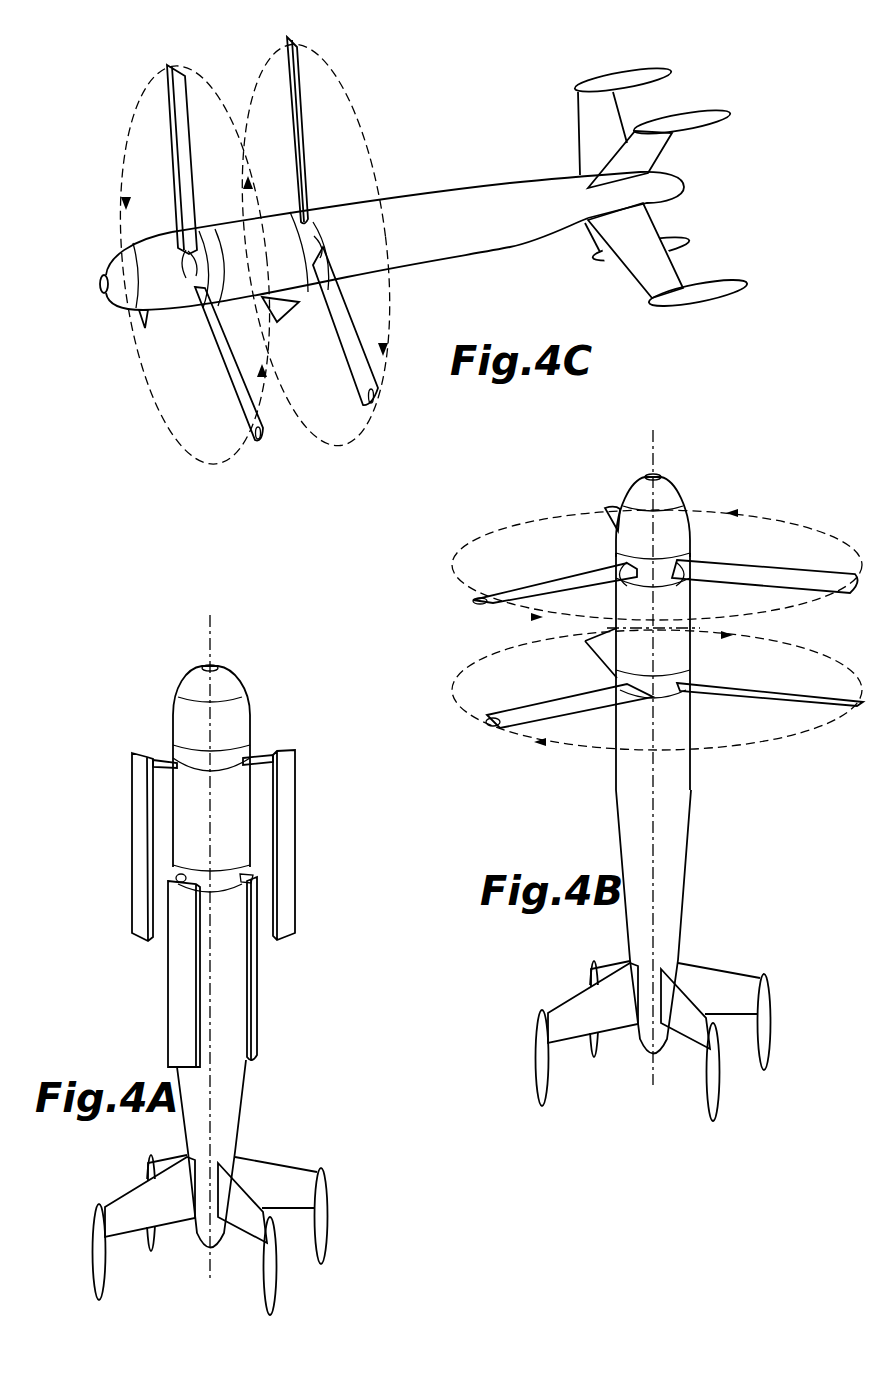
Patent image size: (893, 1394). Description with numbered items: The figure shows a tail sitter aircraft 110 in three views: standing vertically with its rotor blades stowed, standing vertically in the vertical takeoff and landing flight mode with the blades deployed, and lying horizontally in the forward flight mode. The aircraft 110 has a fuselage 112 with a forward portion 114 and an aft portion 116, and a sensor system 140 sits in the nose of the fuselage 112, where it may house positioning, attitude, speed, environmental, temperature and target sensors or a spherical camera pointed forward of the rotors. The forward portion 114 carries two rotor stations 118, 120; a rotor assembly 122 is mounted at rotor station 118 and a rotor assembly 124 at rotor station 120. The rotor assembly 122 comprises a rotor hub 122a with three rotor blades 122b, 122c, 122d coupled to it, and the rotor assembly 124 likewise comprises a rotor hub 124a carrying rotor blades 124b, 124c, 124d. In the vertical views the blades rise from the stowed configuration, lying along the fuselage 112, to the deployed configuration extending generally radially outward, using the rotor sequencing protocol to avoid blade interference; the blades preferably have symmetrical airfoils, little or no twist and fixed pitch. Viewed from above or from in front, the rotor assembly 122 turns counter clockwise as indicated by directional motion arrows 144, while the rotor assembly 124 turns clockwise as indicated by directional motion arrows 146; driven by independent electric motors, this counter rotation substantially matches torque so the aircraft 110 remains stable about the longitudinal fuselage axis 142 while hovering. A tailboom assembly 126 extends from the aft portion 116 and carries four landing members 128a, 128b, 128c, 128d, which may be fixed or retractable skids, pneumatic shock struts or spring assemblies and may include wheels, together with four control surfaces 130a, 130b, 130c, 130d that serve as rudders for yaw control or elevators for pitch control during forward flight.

In FIG. 4C, the tail sitter aircraft 110 is at (386, 98).
In FIG. 4A, the tail sitter aircraft 110 is at (178, 668).
In FIG. 4B, the tail sitter aircraft 110 is at (565, 502).
In FIG. 4C, the fuselage 112 is at (418, 207).
In FIG. 4A, the fuselage 112 is at (240, 980).
In FIG. 4B, the fuselage 112 is at (690, 800).
In FIG. 4C, the forward portion 114 is at (262, 225).
In FIG. 4A, the forward portion 114 is at (238, 815).
In FIG. 4B, the forward portion 114 is at (685, 655).
In FIG. 4C, the aft portion 116 is at (483, 232).
In FIG. 4A, the aft portion 116 is at (222, 1078).
In FIG. 4B, the aft portion 116 is at (680, 897).
In FIG. 4C, the rotor station 118 is at (211, 240).
In FIG. 4A, the rotor station 118 is at (228, 773).
In FIG. 4B, the rotor station 118 is at (617, 626).
In FIG. 4C, the rotor station 120 is at (312, 230).
In FIG. 4A, the rotor station 120 is at (216, 893).
In FIG. 4B, the rotor station 120 is at (620, 742).
In FIG. 4C, the rotor assembly 122 is at (200, 126).
In FIG. 4A, the rotor assembly 122 is at (124, 825).
In FIG. 4B, the rotor assembly 122 is at (770, 558).
In FIG. 4C, the rotor hub 122a is at (190, 278).
In FIG. 4A, the rotor hub 122a is at (195, 768).
In FIG. 4B, the rotor hub 122a is at (668, 578).
In FIG. 4C, the rotor blade 122b is at (172, 110).
In FIG. 4A, the rotor blade 122b is at (138, 862).
In FIG. 4B, the rotor blade 122b is at (615, 502).
In FIG. 4C, the rotor blade 122c is at (143, 328).
In FIG. 4A, the rotor blade 122c is at (290, 867).
In FIG. 4B, the rotor blade 122c is at (507, 597).
In FIG. 4C, the rotor blade 122d is at (233, 388).
In FIG. 4B, the rotor blade 122d is at (810, 568).
In FIG. 4C, the rotor assembly 124 is at (308, 100).
In FIG. 4A, the rotor assembly 124 is at (262, 1023).
In FIG. 4B, the rotor assembly 124 is at (803, 714).
In FIG. 4C, the rotor hub 124a is at (315, 240).
In FIG. 4A, the rotor hub 124a is at (230, 893).
In FIG. 4B, the rotor hub 124a is at (678, 700).
In FIG. 4C, the rotor blade 124b is at (290, 83).
In FIG. 4A, the rotor blade 124b is at (170, 1021).
In FIG. 4B, the rotor blade 124b is at (575, 653).
In FIG. 4C, the rotor blade 124c is at (297, 311).
In FIG. 4A, the rotor blade 124c is at (256, 1048).
In FIG. 4B, the rotor blade 124c is at (505, 712).
In FIG. 4C, the rotor blade 124d is at (322, 430).
In FIG. 4B, the rotor blade 124d is at (825, 698).
In FIG. 4C, the tailboom assembly 126 is at (714, 134).
In FIG. 4A, the tailboom assembly 126 is at (340, 1197).
In FIG. 4B, the tailboom assembly 126 is at (788, 1019).
In FIG. 4C, the landing member 128a is at (614, 72).
In FIG. 4A, the landing member 128a is at (330, 1234).
In FIG. 4B, the landing member 128a is at (773, 1047).
In FIG. 4C, the landing member 128b is at (690, 118).
In FIG. 4A, the landing member 128b is at (282, 1290).
In FIG. 4B, the landing member 128b is at (722, 1098).
In FIG. 4C, the landing member 128c is at (727, 285).
In FIG. 4A, the landing member 128c is at (106, 1273).
In FIG. 4B, the landing member 128c is at (538, 1087).
In FIG. 4C, the landing member 128d is at (680, 242).
In FIG. 4A, the landing member 128d is at (162, 1237).
In FIG. 4B, the landing member 128d is at (607, 1047).
In FIG. 4C, the control surface 130a is at (592, 118).
In FIG. 4A, the control surface 130a is at (267, 1166).
In FIG. 4B, the control surface 130a is at (710, 972).
In FIG. 4C, the control surface 130b is at (618, 164).
In FIG. 4A, the control surface 130b is at (247, 1231).
In FIG. 4B, the control surface 130b is at (692, 1038).
In FIG. 4C, the control surface 130c is at (647, 278).
In FIG. 4A, the control surface 130c is at (125, 1198).
In FIG. 4B, the control surface 130c is at (568, 1004).
In FIG. 4C, the control surface 130d is at (600, 247).
In FIG. 4A, the control surface 130d is at (155, 1163).
In FIG. 4B, the control surface 130d is at (598, 971).
In FIG. 4C, the sensor system 140 is at (108, 263).
In FIG. 4A, the sensor system 140 is at (226, 683).
In FIG. 4B, the sensor system 140 is at (673, 490).
In FIG. 4B, the longitudinal fuselage axis 142 is at (657, 447).
In FIG. 4C, the directional motion arrows 144 is at (187, 433).
In FIG. 4B, the directional motion arrows 144 is at (466, 542).
In FIG. 4C, the directional motion arrows 146 is at (370, 427).
In FIG. 4B, the directional motion arrows 146 is at (467, 663).